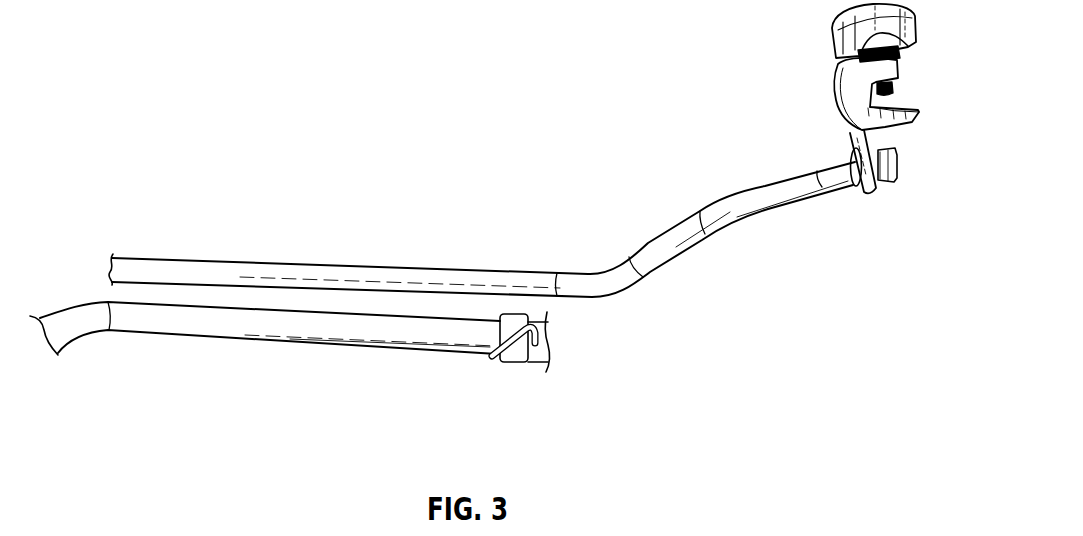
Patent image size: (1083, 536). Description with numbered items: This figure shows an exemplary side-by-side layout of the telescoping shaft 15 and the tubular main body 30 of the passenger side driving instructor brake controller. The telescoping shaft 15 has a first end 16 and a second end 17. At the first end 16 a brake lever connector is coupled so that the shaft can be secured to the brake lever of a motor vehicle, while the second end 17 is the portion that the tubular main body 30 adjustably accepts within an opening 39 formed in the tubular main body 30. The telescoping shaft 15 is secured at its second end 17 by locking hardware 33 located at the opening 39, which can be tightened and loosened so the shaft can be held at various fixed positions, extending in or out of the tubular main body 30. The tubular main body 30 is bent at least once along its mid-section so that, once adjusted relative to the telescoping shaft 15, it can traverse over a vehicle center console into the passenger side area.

The telescoping shaft 15 is at (237, 258).
The first end 16 is at (772, 156).
The second end 17 is at (115, 246).
The tubular main body 30 is at (350, 332).
The locking hardware 33 is at (512, 363).
The opening 39 is at (567, 343).